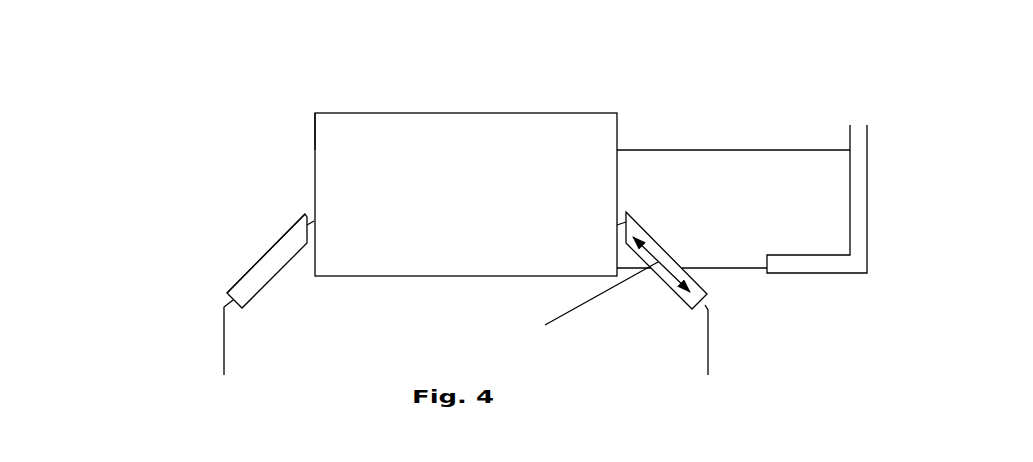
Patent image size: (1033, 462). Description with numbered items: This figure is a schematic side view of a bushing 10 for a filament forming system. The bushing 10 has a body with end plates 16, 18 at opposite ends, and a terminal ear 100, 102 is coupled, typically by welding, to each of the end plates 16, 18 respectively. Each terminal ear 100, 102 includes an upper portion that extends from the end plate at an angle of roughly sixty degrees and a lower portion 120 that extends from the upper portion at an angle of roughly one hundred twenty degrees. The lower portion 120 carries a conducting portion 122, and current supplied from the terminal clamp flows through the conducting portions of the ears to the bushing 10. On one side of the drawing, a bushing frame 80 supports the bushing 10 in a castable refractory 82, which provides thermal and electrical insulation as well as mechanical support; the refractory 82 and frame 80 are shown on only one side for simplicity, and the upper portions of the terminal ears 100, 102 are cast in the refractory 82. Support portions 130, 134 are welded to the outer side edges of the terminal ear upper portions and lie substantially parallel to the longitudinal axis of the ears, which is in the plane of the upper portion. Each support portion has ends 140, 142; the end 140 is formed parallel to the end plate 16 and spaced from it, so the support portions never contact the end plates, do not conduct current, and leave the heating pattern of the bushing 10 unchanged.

The bushing 10 is at (513, 95).
The end plate 16 is at (315, 128).
The end plate 18 is at (617, 130).
The bushing frame 80 is at (858, 232).
The castable refractory 82 is at (768, 197).
The terminal ear 100 is at (142, 185).
The terminal ear 102 is at (760, 360).
The lower portion 120 is at (707, 305).
The conducting portion 122 is at (708, 320).
The support portion 130 is at (265, 267).
The support portion 134 is at (662, 279).
The end 140 is at (307, 213).
The end 142 is at (225, 295).